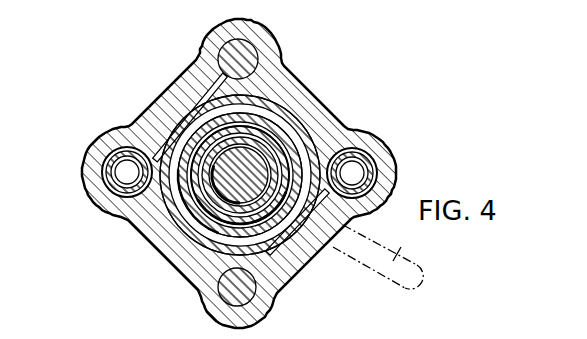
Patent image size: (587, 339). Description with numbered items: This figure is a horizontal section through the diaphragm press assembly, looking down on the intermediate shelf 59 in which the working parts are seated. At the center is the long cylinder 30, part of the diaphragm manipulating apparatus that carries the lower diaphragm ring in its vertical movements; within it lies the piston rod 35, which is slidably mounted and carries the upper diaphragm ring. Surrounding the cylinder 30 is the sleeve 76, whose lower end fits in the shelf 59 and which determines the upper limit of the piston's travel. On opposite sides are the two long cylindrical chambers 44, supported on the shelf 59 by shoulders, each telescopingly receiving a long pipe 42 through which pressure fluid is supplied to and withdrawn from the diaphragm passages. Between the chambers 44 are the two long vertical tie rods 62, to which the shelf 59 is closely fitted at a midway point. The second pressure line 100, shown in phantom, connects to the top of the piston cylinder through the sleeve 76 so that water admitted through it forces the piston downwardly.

The cylinder 30 is at (262, 141).
The piston rod 35 is at (258, 165).
The pipe 42 is at (112, 183).
The cylindrical chamber 44 is at (108, 172).
The intermediate shelf 59 is at (306, 259).
The tie rod 62 is at (252, 53).
The sleeve 76 is at (198, 218).
The pressure line 100 is at (399, 251).